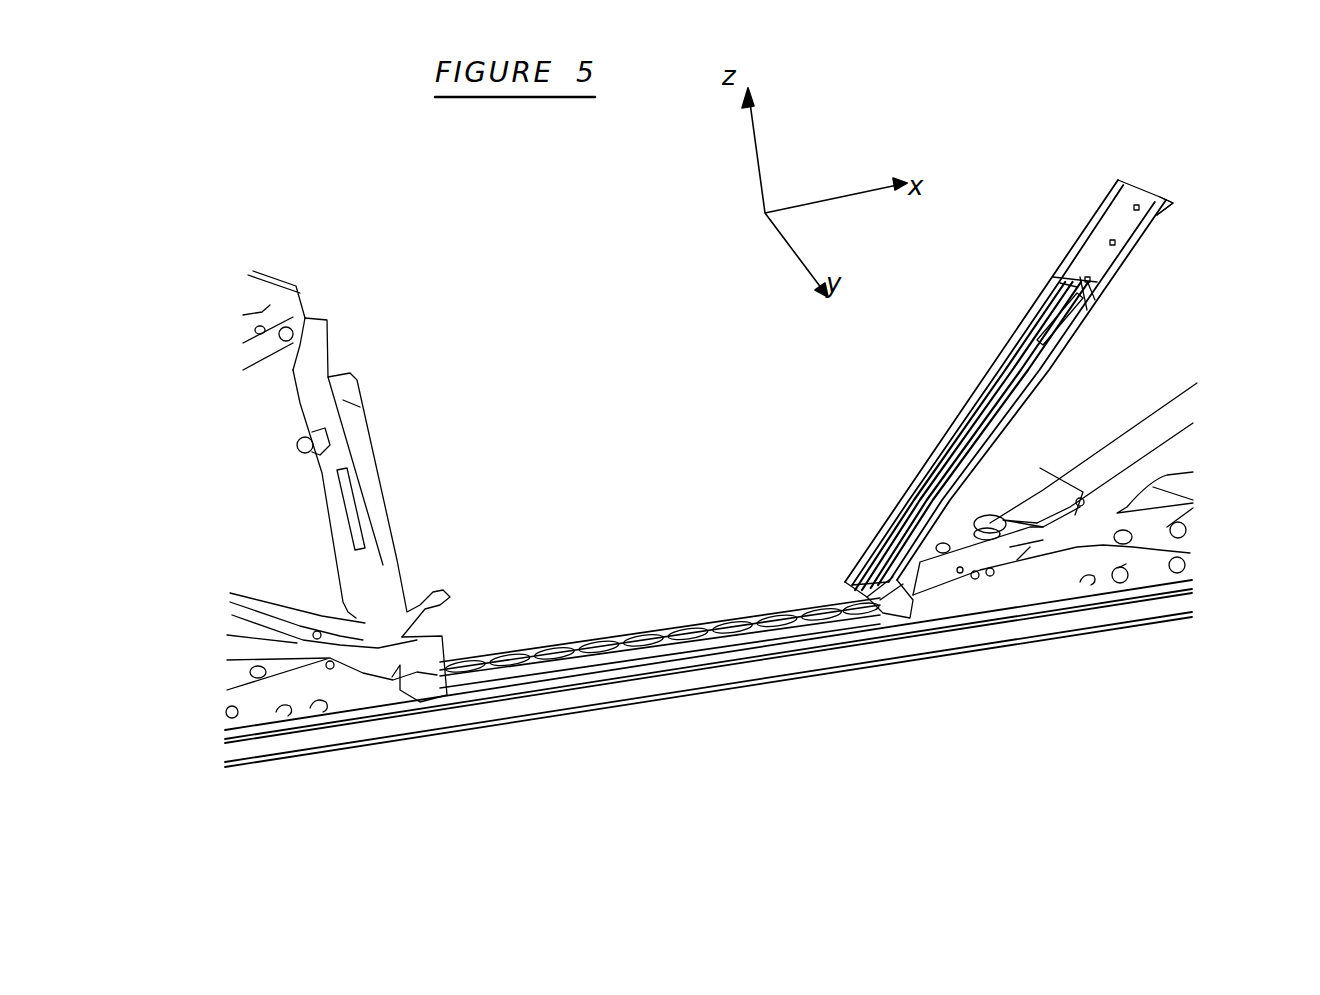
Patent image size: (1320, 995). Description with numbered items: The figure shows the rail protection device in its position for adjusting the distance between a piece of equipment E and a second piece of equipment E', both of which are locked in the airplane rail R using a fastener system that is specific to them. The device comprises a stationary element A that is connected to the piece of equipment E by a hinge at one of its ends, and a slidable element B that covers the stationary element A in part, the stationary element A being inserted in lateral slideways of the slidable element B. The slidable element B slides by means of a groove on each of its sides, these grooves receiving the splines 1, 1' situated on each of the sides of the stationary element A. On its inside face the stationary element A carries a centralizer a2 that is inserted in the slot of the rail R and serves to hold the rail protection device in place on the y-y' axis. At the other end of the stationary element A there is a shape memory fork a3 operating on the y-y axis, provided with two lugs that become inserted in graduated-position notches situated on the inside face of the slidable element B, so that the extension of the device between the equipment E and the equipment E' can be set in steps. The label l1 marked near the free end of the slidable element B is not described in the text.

The slidable element B is at (1087, 258).
The bar end l1 is at (1173, 203).
The shape memory fork a3 is at (1090, 307).
The centralizer a2 is at (945, 425).
The spline 1 is at (842, 503).
The stationary element A is at (867, 527).
The spline 1' is at (1085, 465).
The piece of equipment E' is at (407, 486).
The airplane rail R is at (700, 625).
The piece of equipment E is at (708, 647).